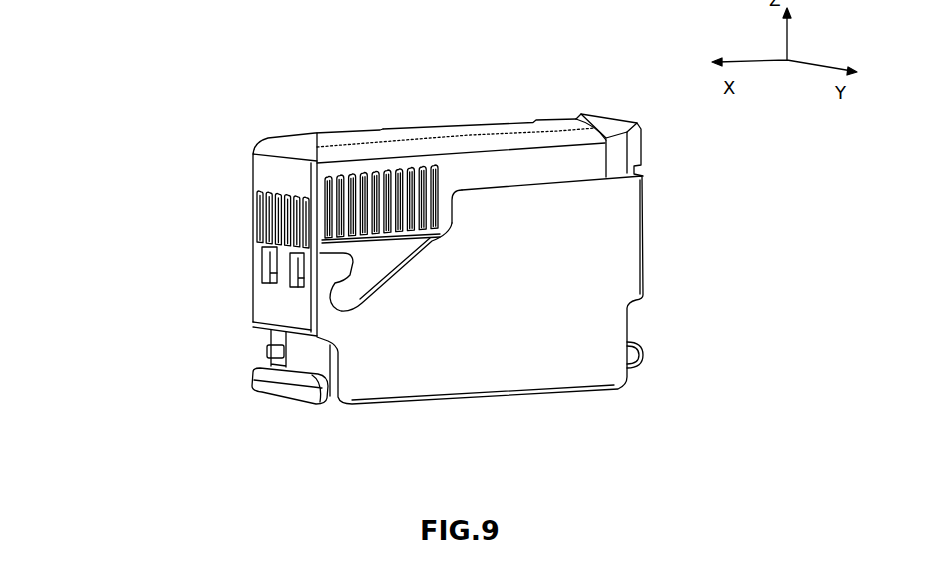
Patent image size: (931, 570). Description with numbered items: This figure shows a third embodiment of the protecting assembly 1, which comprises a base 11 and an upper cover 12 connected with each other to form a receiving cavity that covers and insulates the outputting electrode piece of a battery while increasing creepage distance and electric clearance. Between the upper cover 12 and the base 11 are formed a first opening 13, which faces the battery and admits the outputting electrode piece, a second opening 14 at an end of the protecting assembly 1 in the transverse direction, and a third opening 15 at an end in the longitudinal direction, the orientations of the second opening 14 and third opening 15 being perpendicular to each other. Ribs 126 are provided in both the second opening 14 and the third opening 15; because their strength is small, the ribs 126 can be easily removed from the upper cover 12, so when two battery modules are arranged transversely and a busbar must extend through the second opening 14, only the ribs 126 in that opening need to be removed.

The protecting assembly 1 is at (113, 74).
The base 11 is at (473, 377).
The upper cover 12 is at (317, 138).
The first opening 13 is at (437, 126).
The second opening 14 is at (257, 233).
The third opening 15 is at (452, 220).
The ribs 126 is at (277, 210).